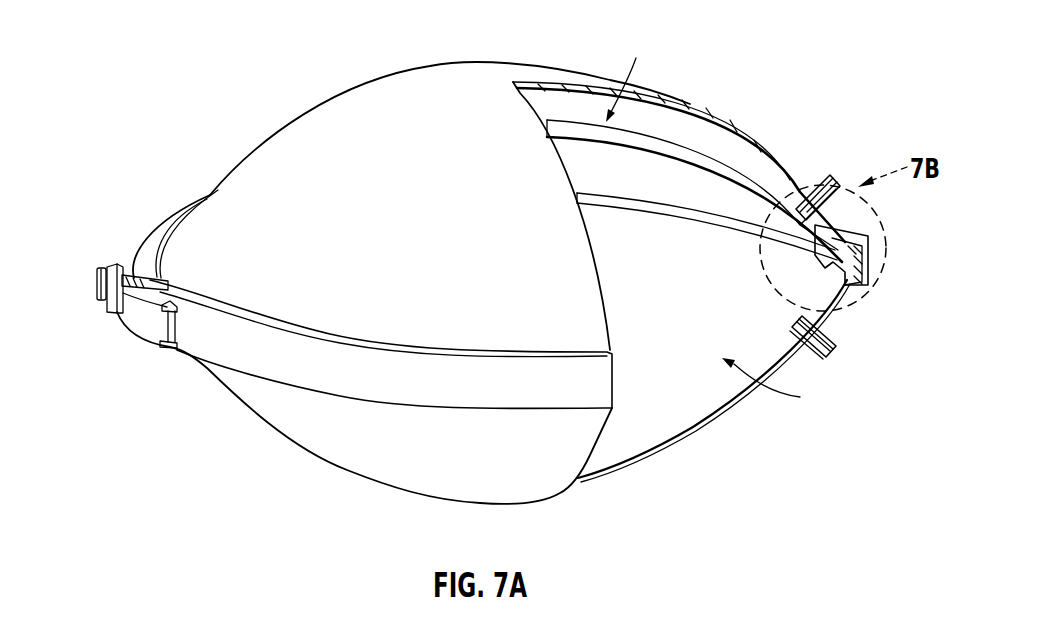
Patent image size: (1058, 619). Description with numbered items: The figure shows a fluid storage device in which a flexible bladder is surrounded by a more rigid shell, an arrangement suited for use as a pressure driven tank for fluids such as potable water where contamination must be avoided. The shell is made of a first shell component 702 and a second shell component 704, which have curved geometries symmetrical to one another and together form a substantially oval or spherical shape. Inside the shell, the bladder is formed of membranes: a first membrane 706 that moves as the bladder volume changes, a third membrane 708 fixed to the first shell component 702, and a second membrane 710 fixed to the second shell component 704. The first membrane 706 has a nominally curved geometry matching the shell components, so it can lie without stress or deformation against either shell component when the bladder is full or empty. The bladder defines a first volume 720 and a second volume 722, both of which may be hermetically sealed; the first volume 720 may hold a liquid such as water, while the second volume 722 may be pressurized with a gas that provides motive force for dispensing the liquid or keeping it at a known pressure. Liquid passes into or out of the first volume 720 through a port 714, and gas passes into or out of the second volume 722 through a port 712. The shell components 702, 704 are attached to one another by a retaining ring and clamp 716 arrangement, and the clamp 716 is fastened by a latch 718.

The first shell component 702 is at (320, 130).
The second shell component 704 is at (357, 443).
The first membrane 706 is at (693, 157).
The third membrane 708 is at (572, 84).
The second membrane 710 is at (703, 425).
The port 712 is at (822, 182).
The port 714 is at (832, 337).
The clamp 716 is at (173, 213).
The latch 718 is at (103, 267).
The first volume 720 is at (785, 387).
The second volume 722 is at (632, 76).